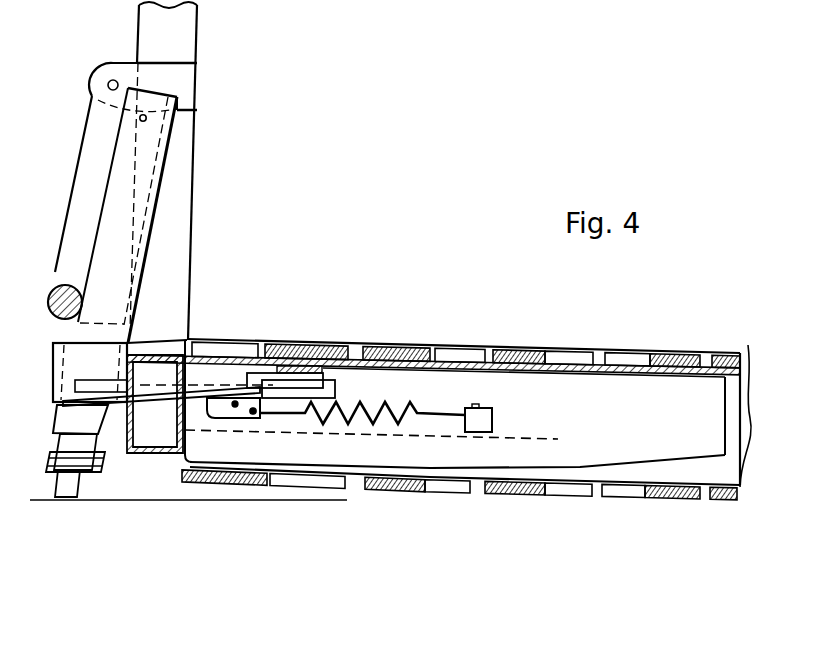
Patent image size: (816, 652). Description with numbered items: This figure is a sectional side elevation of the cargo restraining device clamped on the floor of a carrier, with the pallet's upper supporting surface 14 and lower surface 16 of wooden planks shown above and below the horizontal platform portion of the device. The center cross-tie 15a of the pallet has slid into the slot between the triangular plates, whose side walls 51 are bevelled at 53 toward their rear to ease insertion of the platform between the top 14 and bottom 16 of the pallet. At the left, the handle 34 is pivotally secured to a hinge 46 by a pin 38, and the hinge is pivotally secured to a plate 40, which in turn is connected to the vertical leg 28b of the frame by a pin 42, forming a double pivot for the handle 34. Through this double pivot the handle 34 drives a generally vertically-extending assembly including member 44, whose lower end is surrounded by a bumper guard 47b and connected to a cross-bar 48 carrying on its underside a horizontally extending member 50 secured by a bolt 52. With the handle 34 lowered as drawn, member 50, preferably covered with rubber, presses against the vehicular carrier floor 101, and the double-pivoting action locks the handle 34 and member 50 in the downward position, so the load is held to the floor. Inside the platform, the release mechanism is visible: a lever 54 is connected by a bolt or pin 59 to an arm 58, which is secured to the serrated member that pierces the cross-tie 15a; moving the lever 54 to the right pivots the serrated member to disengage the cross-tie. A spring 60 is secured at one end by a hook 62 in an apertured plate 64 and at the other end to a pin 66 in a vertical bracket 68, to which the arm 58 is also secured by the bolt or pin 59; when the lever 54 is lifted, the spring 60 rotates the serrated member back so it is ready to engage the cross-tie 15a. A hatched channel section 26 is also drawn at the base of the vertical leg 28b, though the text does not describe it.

The pin 42 is at (113, 80).
The plate 40 is at (163, 80).
The pin 38 is at (147, 118).
The hinge 46 is at (87, 154).
The handle 34 is at (58, 288).
The members 44 is at (127, 233).
The vertical leg 28b is at (183, 258).
The bumper guard 47b is at (98, 360).
The vertical bracket 68 is at (220, 405).
The upper supporting surface 14 is at (390, 348).
The arm 58 is at (327, 398).
The spring 60 is at (397, 408).
The hook 62 is at (478, 405).
The apertured plate 64 is at (493, 423).
The side walls 51 is at (660, 402).
The cross-tie 15a is at (738, 400).
The bevel 53 is at (680, 460).
The lever 54 is at (139, 406).
The cross-bar 48 is at (95, 447).
The channel 26 is at (150, 453).
The horizontally extending member 50 is at (66, 505).
The bolt 52 is at (100, 475).
The bolt or pin 59 is at (222, 402).
The pin 66 is at (253, 414).
The vehicular carrier floor 101 is at (347, 500).
The lower surface 16 is at (548, 497).